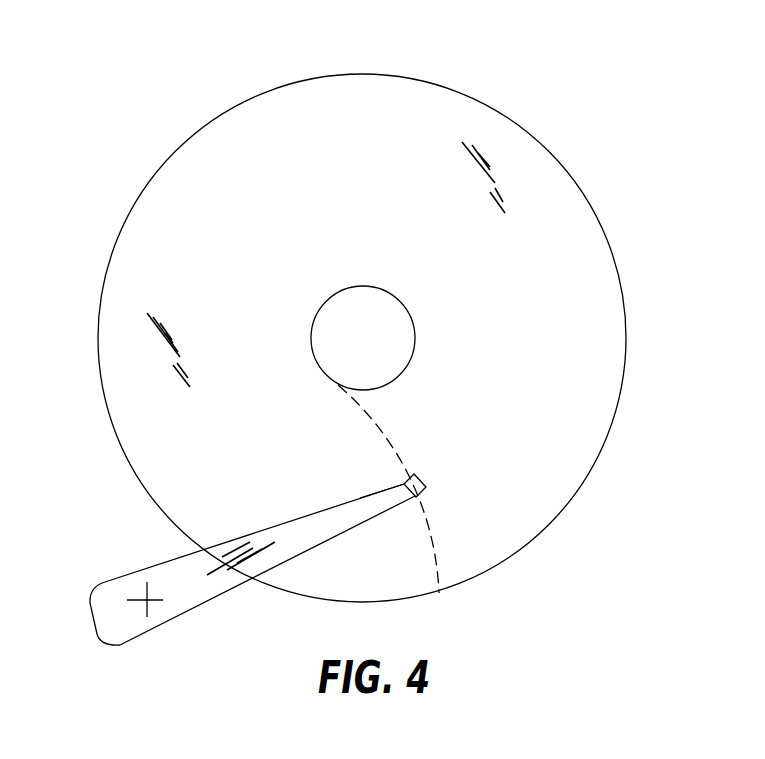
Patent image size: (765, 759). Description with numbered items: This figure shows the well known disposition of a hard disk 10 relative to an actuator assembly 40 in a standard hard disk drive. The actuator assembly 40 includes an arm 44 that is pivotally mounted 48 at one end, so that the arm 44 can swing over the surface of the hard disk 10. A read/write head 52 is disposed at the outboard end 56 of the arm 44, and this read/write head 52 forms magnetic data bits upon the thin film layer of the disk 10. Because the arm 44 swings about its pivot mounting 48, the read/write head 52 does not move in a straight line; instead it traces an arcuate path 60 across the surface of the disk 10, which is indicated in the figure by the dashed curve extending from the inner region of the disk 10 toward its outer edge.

The hard disk 10 is at (157, 119).
The actuator assembly 40 is at (247, 559).
The arm 44 is at (217, 587).
The pivot mounting 48 is at (147, 602).
The read/write head 52 is at (420, 480).
The outboard end 56 is at (377, 495).
The arcuate path 60 is at (388, 440).